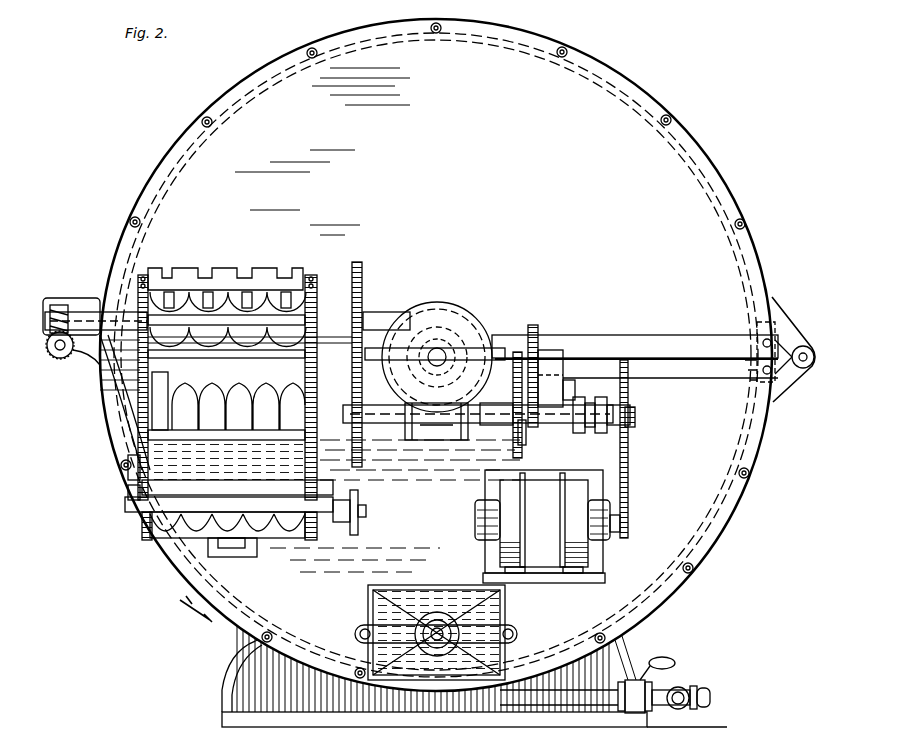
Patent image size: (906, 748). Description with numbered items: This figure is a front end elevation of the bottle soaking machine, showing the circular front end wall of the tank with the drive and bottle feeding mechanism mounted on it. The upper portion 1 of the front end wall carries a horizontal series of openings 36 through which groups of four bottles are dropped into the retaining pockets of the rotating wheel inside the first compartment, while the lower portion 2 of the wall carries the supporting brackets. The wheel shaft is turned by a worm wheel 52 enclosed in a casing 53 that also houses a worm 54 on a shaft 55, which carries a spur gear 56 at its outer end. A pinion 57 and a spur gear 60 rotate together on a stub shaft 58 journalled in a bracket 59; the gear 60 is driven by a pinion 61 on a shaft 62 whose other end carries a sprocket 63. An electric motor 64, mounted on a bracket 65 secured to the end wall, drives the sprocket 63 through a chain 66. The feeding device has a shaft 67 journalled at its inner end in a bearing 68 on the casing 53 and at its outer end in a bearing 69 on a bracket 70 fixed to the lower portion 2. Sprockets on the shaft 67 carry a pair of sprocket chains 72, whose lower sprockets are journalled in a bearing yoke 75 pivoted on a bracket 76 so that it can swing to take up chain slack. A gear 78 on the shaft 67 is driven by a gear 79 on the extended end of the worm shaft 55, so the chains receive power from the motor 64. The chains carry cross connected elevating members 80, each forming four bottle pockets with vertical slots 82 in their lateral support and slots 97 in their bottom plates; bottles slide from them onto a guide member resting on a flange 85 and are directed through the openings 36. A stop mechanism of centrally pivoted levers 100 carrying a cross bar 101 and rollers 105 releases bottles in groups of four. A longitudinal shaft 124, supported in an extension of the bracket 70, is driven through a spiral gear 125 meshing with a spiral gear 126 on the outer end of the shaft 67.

The upper portion of the front end wall 1 is at (690, 184).
The lower portion of the front end wall 2 is at (745, 514).
The openings 36 is at (210, 342).
The worm wheel 52 is at (440, 306).
The casing 53 is at (477, 318).
The worm 54 is at (440, 432).
The shaft 55 is at (485, 424).
The spur gear 56 is at (513, 447).
The pinion 57 is at (516, 352).
The stub shaft 58 is at (548, 355).
The bracket 59 is at (570, 390).
The spur gear 60 is at (534, 325).
The pinion 61 is at (535, 432).
The shaft 62 is at (590, 424).
The sprocket 63 is at (634, 414).
The electric motor 64 is at (575, 490).
The bracket 65 is at (603, 578).
The chain 66 is at (628, 455).
The shaft 67 is at (180, 320).
The bearing 68 is at (392, 318).
The bearing 69 is at (92, 312).
The bracket 70 is at (108, 402).
The sprocket chains 72 is at (138, 462).
The bearing yoke 75 is at (125, 510).
The bracket 76 is at (242, 548).
The gear 78 is at (362, 266).
The gear 79 is at (365, 462).
The elevating members 80 is at (268, 275).
The vertical slots 82 is at (262, 395).
The flange 85 is at (338, 355).
The slots 97 is at (245, 278).
The lever 100 is at (340, 493).
The cross bar 101 is at (200, 530).
The rollers 105 is at (130, 490).
The shaft 124 is at (58, 358).
The spiral gear 125 is at (80, 368).
The spiral gear 126 is at (55, 303).